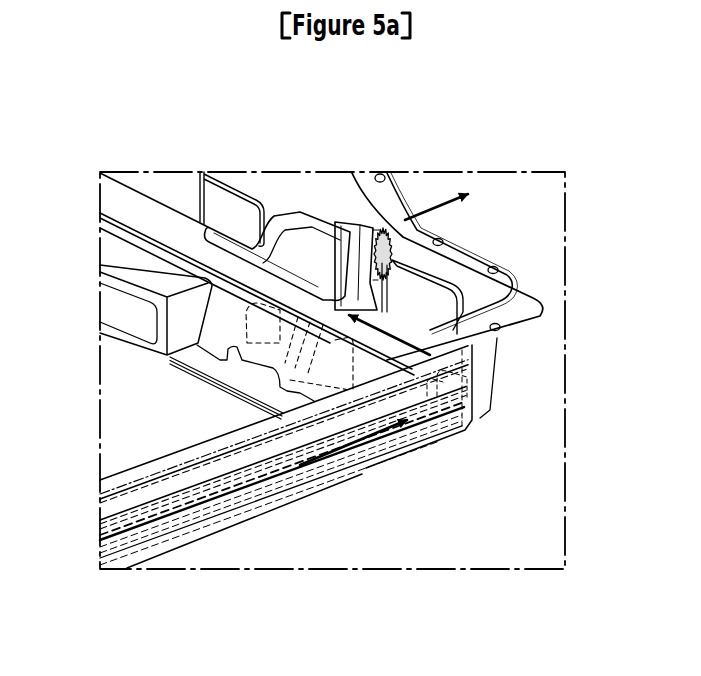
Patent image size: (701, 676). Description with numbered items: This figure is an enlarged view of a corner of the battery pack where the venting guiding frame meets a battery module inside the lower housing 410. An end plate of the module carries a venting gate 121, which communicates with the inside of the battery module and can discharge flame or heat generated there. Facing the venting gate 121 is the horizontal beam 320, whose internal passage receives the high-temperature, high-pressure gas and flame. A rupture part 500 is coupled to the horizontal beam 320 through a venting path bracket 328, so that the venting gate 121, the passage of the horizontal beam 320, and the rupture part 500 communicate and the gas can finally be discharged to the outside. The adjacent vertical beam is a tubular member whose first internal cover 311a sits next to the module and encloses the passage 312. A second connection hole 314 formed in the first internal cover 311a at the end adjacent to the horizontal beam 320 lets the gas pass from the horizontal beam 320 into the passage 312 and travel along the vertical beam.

The venting gate 121 is at (108, 250).
The venting path bracket 328 is at (285, 240).
The rupture part 500 is at (367, 228).
The horizontal beam 320 is at (405, 335).
The lower housing 410 is at (528, 287).
The first internal cover 311a is at (482, 357).
The second connection hole 314 is at (477, 417).
The passage 312 is at (172, 548).